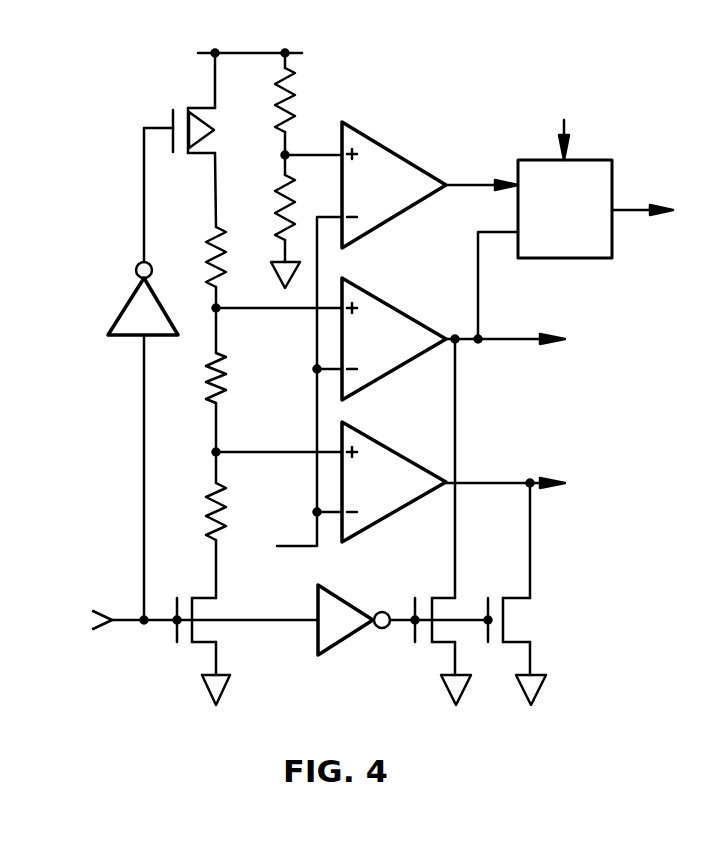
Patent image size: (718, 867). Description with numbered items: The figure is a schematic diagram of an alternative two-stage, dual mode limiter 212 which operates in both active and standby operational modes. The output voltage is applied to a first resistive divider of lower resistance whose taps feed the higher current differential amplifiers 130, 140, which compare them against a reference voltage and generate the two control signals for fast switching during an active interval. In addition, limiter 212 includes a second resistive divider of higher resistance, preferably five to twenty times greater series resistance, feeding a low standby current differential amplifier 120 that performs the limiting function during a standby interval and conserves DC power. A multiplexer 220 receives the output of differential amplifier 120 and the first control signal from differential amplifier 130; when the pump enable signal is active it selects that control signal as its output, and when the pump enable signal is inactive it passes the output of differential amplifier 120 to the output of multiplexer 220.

The dual mode limiter 212 is at (528, 65).
The low standby current differential amplifier 120 is at (401, 197).
The differential amplifier 130 is at (401, 351).
The differential amplifier 140 is at (401, 494).
The multiplexer 220 is at (587, 199).